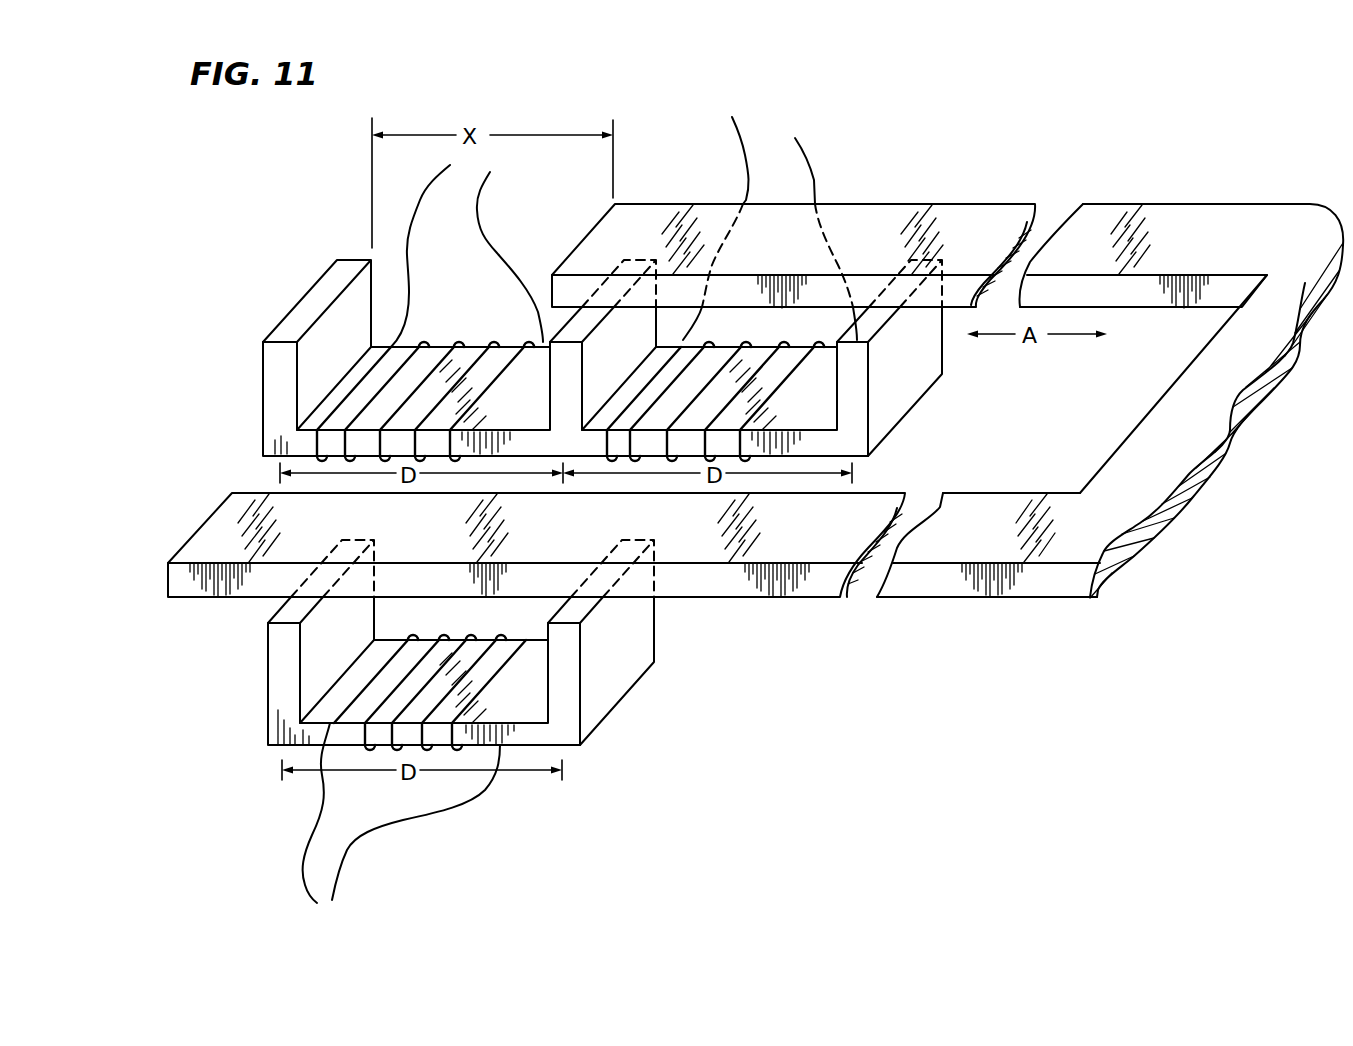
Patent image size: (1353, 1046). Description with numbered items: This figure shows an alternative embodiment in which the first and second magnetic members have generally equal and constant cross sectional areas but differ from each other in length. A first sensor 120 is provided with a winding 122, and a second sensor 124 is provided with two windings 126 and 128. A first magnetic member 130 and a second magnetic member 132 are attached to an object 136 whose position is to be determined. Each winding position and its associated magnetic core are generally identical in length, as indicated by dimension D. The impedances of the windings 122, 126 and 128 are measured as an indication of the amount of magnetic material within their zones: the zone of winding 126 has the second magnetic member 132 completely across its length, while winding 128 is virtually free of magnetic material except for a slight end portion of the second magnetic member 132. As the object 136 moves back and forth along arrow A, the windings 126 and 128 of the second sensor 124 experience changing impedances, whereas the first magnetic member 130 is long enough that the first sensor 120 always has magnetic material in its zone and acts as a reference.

The first sensor 120 is at (638, 659).
The winding 122 is at (413, 820).
The second sensor 124 is at (898, 399).
The winding 126 is at (810, 162).
The winding 128 is at (487, 245).
The first magnetic member 130 is at (780, 597).
The second magnetic member 132 is at (872, 215).
The object 136 is at (1195, 413).